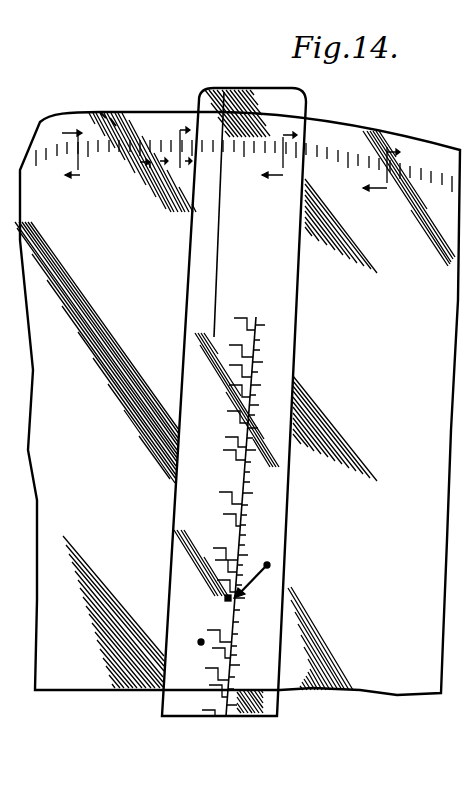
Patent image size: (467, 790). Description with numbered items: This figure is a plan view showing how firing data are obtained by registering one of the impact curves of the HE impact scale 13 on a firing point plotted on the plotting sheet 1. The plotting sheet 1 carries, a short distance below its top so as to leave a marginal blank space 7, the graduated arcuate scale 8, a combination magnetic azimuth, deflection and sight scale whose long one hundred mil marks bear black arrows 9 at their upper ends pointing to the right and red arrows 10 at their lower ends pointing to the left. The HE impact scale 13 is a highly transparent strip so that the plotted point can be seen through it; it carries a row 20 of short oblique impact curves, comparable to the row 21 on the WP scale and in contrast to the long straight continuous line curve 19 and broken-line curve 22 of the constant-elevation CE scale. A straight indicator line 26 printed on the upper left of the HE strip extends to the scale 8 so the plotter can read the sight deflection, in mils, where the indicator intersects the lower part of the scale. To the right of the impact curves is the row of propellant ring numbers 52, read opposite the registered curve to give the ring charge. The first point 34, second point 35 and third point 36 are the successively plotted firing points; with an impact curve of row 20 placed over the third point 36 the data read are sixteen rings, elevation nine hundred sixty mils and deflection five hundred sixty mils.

The plotting sheet 1 is at (237, 403).
The marginal blank space 7 is at (113, 123).
The arcuate scale 8 is at (127, 137).
The black arrows 9 is at (103, 113).
The red arrows 10 is at (148, 171).
The HE impact scale 13 is at (249, 81).
The continuous line curve 19 is at (63, 130).
The row of impact curves 20 is at (238, 312).
The row of impact curves 21 is at (281, 144).
The broken-line curve 22 is at (384, 160).
The straight indicator line 26 is at (222, 228).
The first point 34 is at (200, 640).
The second point 35 is at (268, 562).
The third point 36 is at (232, 598).
The row of propellant ring numbers 52 is at (278, 310).